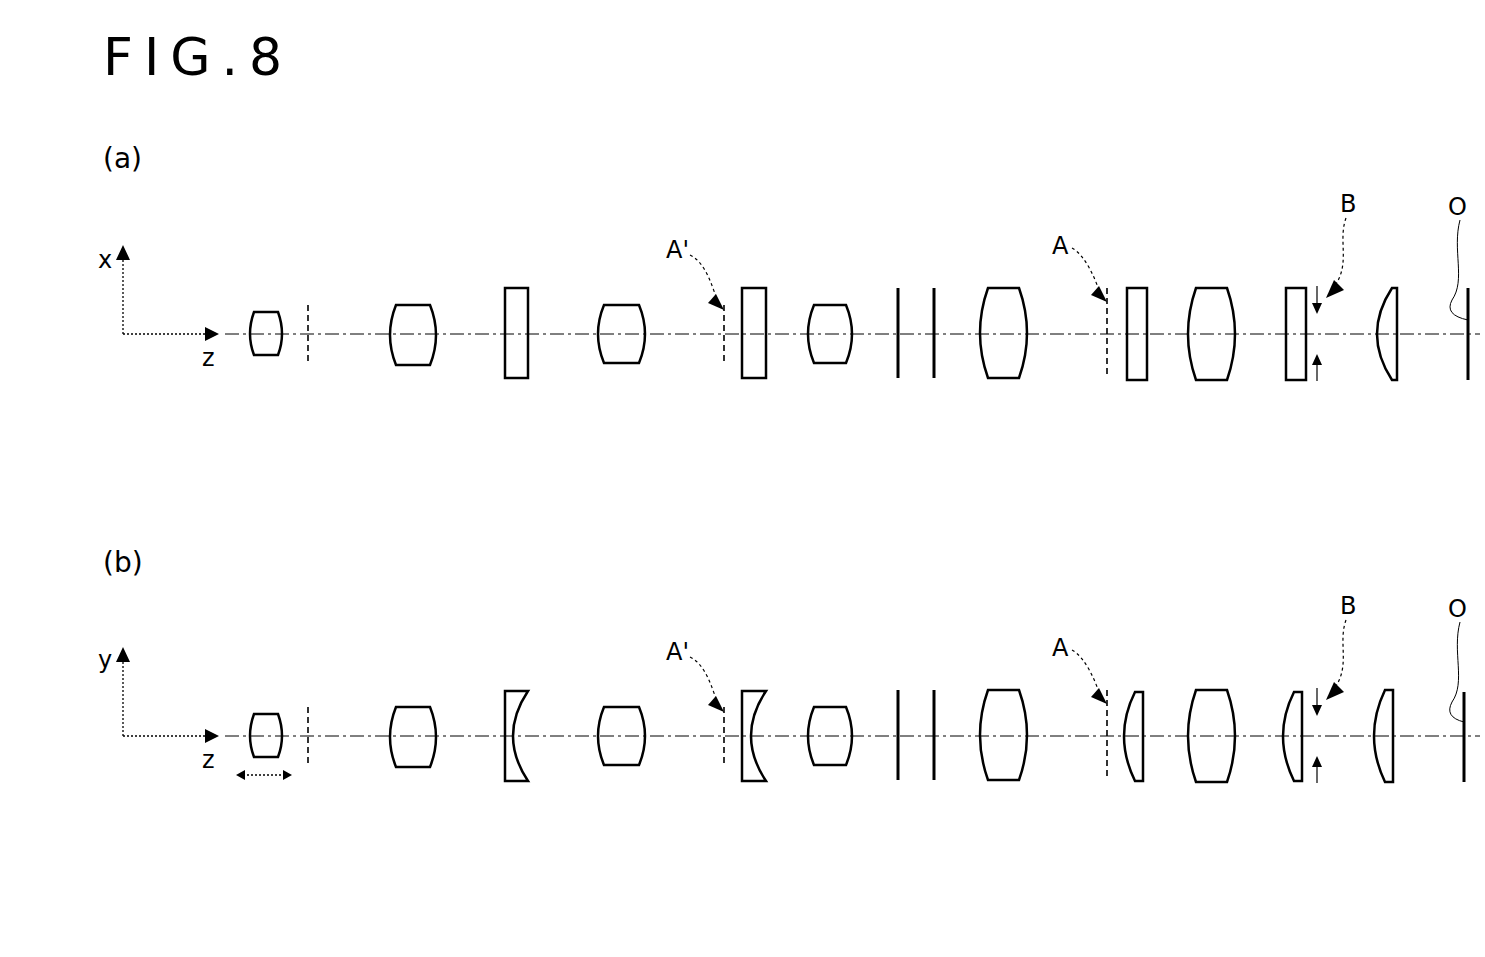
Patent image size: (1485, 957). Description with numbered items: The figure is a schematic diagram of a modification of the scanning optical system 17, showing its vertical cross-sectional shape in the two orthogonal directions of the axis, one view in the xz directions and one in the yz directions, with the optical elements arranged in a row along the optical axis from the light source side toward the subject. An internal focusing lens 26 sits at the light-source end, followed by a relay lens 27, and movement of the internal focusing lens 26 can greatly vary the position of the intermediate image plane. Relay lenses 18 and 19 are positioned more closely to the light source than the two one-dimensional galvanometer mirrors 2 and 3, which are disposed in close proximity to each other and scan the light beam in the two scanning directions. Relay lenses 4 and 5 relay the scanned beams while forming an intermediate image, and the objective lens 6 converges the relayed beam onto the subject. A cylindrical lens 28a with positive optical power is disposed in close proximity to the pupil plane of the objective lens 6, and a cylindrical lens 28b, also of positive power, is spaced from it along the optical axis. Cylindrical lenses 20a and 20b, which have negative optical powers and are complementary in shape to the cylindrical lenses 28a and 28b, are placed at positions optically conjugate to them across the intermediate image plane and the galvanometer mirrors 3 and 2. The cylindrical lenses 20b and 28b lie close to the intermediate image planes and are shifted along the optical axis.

The galvanometer mirror 2 is at (897, 312).
The galvanometer mirror 3 is at (933, 312).
The relay lens 4 is at (1002, 288).
The relay lens 5 is at (1208, 288).
The objective lens 6 is at (1390, 288).
The scanning optical system 17 is at (1142, 178).
The relay lens 18 is at (617, 305).
The relay lens 19 is at (828, 305).
The cylindrical lens 20a is at (513, 288).
The cylindrical lens 20b is at (755, 288).
The internal focusing lens 26 is at (262, 312).
The relay lens 27 is at (410, 305).
The cylindrical lens 28a is at (1297, 288).
The cylindrical lens 28b is at (1137, 288).